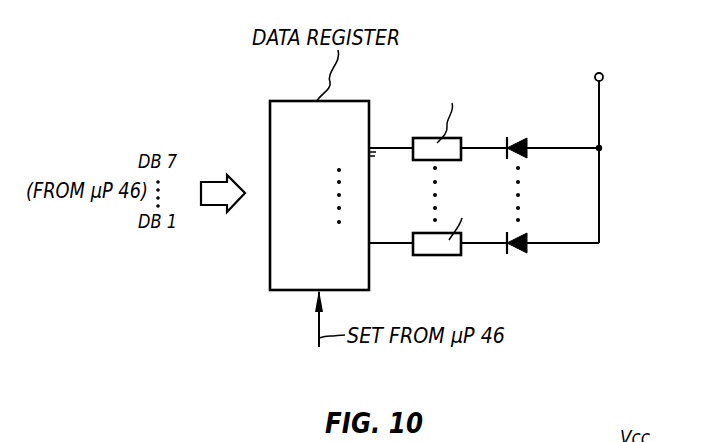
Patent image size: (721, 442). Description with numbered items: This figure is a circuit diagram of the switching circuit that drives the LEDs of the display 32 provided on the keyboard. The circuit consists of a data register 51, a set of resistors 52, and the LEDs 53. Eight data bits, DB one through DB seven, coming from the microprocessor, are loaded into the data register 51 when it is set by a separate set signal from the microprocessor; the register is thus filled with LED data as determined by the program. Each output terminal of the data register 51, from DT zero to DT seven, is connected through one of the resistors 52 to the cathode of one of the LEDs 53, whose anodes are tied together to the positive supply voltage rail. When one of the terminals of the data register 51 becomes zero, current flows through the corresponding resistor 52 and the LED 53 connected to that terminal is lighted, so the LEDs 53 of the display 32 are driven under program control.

The display 32 is at (612, 208).
The data register 51 is at (362, 285).
The resistors 52 is at (448, 255).
The LEDs 53 is at (520, 250).